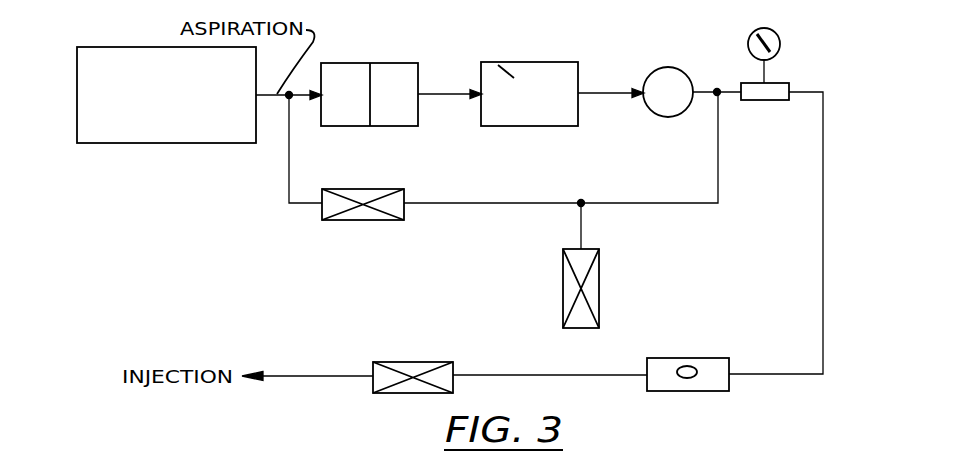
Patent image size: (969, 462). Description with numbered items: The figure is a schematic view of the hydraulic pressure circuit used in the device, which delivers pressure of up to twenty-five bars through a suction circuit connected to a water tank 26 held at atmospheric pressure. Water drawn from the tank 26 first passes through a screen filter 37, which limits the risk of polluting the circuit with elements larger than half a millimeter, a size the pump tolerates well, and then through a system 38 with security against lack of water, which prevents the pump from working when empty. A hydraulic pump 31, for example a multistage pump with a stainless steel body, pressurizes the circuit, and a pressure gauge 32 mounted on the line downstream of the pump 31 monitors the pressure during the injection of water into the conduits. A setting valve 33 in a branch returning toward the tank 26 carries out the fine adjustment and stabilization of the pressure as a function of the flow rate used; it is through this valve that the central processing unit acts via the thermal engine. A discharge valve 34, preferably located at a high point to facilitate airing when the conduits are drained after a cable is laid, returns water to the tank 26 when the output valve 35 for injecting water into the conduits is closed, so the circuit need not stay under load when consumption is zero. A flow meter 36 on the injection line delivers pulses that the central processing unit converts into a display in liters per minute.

The water tank 26 is at (121, 12).
The hydraulic pump 31 is at (676, 38).
The pressure gauge 32 is at (781, 42).
The setting valve 33 is at (361, 221).
The discharge valve 34 is at (597, 288).
The output valve 35 is at (387, 362).
The flow meter 36 is at (703, 334).
The screen filter 37 is at (396, 63).
The system with security against lack of water 38 is at (539, 65).